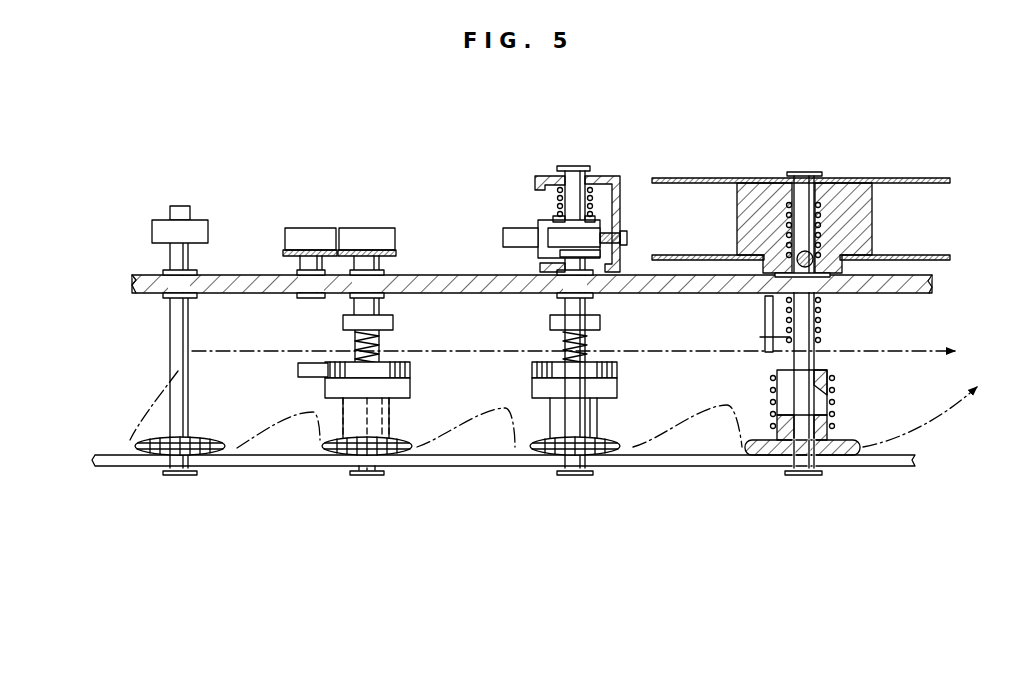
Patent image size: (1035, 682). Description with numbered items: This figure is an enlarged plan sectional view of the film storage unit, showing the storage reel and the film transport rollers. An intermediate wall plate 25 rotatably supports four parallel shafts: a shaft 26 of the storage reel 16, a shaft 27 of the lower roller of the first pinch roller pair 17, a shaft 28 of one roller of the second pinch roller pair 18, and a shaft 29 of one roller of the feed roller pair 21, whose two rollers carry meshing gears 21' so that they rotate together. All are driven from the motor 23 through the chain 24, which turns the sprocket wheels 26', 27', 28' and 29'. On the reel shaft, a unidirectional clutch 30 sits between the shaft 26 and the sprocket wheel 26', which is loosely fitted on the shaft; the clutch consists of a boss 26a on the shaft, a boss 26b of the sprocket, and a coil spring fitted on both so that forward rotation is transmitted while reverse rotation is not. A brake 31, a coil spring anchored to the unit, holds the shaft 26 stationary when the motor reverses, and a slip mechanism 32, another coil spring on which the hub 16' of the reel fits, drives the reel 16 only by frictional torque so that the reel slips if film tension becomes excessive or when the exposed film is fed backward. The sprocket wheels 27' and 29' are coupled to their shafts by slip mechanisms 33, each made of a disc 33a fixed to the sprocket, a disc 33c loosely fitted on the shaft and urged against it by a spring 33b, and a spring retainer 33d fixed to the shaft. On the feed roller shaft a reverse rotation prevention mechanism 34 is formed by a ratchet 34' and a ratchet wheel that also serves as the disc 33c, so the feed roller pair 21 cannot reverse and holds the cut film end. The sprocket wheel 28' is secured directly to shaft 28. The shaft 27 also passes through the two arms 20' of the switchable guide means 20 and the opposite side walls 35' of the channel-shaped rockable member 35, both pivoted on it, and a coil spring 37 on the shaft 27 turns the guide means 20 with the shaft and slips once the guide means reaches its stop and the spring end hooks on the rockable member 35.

The storage reel 16 is at (801, 188).
The hub of the storage reel 16' is at (806, 194).
The first pinch roller pair 17 is at (590, 238).
The second pinch roller pair 18 is at (152, 232).
The switchable guide means 20 is at (534, 225).
The arms of the switchable guide means 20' is at (628, 201).
The feed roller pair 21 is at (345, 210).
The gears 21' is at (345, 216).
The motor 23 is at (552, 409).
The chain 24 is at (165, 383).
The intermediate wall plate 25 is at (238, 274).
The shaft of the storage reel 26 is at (795, 295).
The boss 26a is at (786, 385).
The boss of the sprocket wheel 26b is at (824, 428).
The sprocket wheel 26' is at (802, 478).
The shaft of the first pinch roller pair 27 is at (541, 320).
The sprocket wheel 27' is at (587, 477).
The shaft of the second pinch roller pair 28 is at (148, 359).
The sprocket wheel 28' is at (198, 477).
The shaft of the feed roller pair 29 is at (372, 299).
The sprocket wheel 29' is at (381, 456).
The unidirectional clutch 30 is at (830, 395).
The brake 31 is at (820, 314).
The slip mechanism 32 is at (822, 223).
The slip mechanism 33 is at (481, 367).
The disc 33a is at (388, 386).
The spring 33b is at (358, 345).
The disc 33c is at (548, 375).
The spring retainer 33d is at (343, 322).
The reverse rotation prevention mechanism 34 is at (416, 348).
The ratchet 34' is at (286, 379).
The rockable member 35 is at (544, 149).
The side walls of the rockable member 35' is at (544, 190).
The coil spring 37 is at (557, 200).